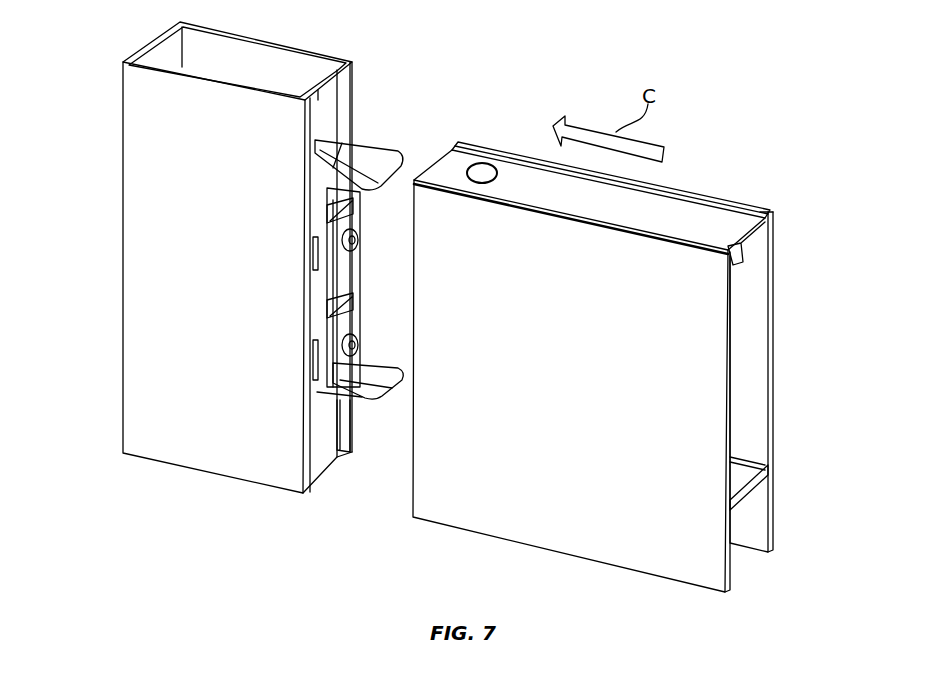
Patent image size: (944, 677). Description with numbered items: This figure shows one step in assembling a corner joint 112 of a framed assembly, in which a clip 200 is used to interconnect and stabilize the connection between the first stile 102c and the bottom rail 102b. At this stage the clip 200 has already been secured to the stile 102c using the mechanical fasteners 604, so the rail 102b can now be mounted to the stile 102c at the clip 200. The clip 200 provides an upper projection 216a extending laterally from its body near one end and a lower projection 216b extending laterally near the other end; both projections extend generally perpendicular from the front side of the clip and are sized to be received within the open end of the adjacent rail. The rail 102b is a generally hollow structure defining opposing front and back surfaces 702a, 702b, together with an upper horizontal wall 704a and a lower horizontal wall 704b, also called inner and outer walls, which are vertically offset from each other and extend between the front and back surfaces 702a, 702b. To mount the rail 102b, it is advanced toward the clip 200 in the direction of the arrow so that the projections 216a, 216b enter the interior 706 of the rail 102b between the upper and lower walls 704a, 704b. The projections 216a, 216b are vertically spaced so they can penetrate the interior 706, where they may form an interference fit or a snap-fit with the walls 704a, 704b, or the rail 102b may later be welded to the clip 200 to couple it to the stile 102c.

The corner joint 112 is at (512, 63).
The first stile 102c is at (122, 178).
The bottom rail 102b is at (773, 264).
The clip 200 is at (377, 140).
The upper projection 216a is at (401, 156).
The lower projection 216b is at (370, 400).
The mechanical fasteners 604 is at (356, 243).
The front surface 702a is at (465, 512).
The back surface 702b is at (706, 190).
The upper horizontal wall 704a is at (736, 228).
The lower horizontal wall 704b is at (767, 453).
The interior 706 is at (750, 362).